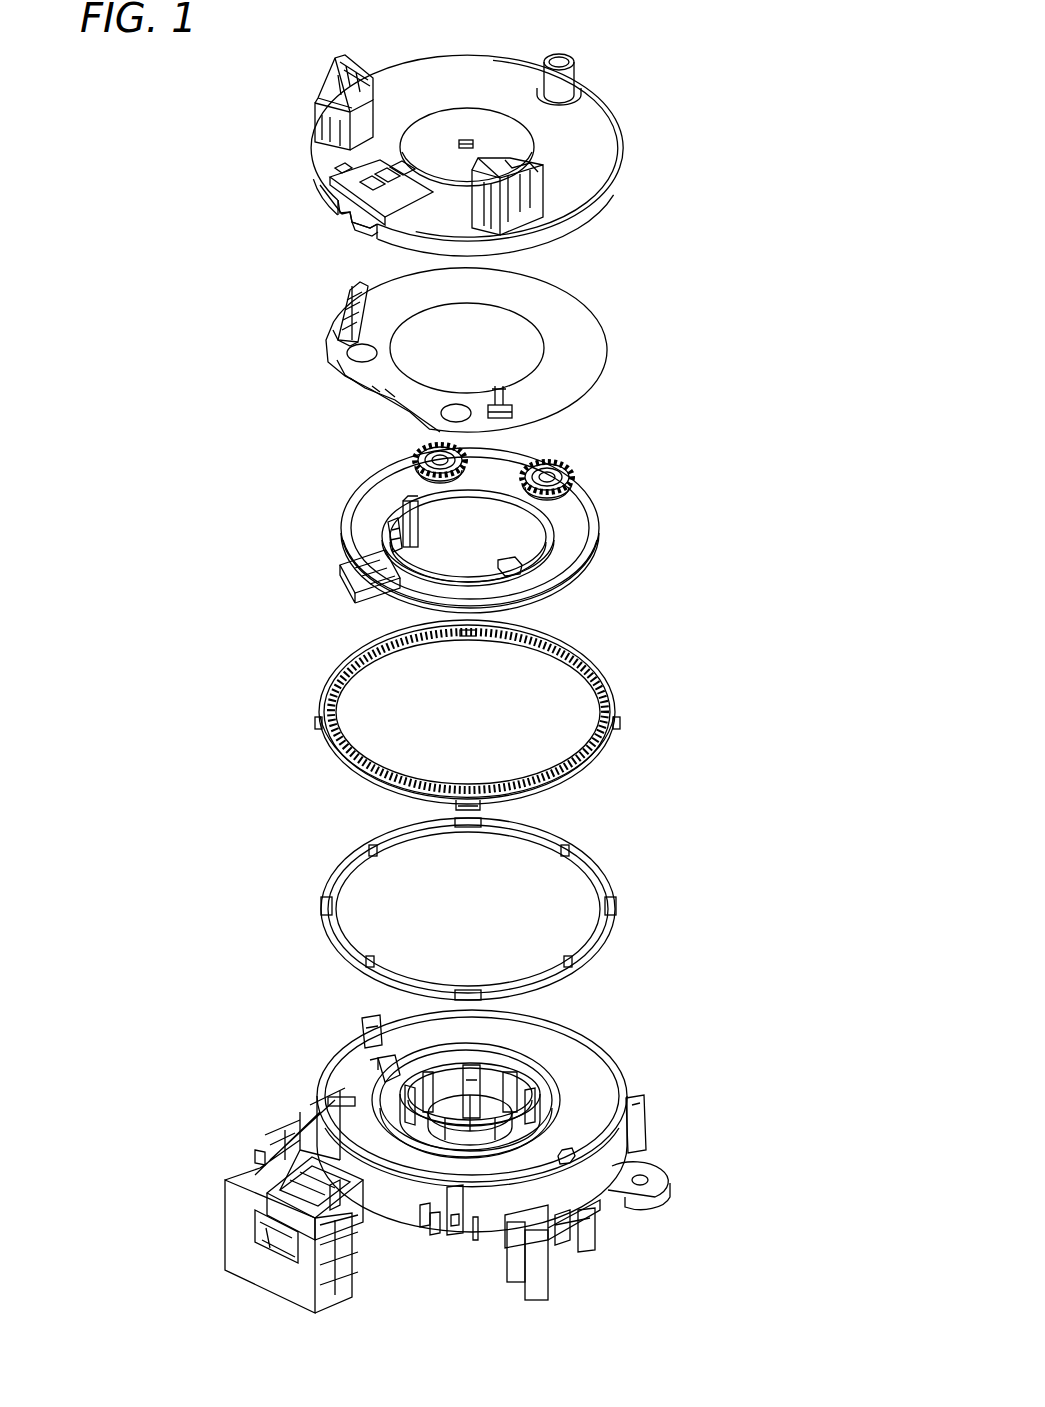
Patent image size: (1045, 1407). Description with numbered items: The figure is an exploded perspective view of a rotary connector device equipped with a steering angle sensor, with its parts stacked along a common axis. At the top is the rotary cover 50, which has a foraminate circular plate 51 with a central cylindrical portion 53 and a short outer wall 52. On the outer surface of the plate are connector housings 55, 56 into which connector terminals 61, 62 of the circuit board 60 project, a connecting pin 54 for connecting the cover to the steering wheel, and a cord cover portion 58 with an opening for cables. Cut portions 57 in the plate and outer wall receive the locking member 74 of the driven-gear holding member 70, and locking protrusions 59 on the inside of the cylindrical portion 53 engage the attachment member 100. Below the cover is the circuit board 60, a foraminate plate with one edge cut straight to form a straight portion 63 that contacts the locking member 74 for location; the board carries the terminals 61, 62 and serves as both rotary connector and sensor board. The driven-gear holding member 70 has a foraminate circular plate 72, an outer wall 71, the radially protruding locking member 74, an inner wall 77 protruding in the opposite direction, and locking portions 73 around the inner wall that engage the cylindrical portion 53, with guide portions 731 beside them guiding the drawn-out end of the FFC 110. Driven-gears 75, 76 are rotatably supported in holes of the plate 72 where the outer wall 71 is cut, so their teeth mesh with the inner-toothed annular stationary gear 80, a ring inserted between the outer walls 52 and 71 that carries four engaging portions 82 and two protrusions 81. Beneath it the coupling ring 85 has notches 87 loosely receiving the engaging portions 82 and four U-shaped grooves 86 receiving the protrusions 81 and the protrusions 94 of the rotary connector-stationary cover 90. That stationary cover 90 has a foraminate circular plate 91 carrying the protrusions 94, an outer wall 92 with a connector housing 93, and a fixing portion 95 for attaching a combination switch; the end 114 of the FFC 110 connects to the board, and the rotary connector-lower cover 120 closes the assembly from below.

The rotary cover 50 is at (476, 134).
The foraminate circular plate 51 is at (605, 160).
The outer wall 52 is at (605, 205).
The cylindrical portion 53 is at (425, 135).
The connecting pin 54 is at (568, 58).
The connector housing 55 is at (323, 115).
The connector housing 56 is at (495, 220).
The cut portion 57 is at (360, 214).
The cord cover portion 58 is at (325, 175).
The locking protrusion 59 is at (465, 138).
The circuit board 60 is at (481, 350).
The connector terminal 61 is at (343, 300).
The connector terminal 62 is at (515, 410).
The straight portion 63 is at (375, 395).
The driven-gear holding member 70 is at (477, 526).
The outer wall 71 is at (560, 572).
The foraminate circular plate 72 is at (565, 535).
The locking portion 73 is at (400, 508).
The guide portion 731 is at (390, 528).
The locking member 74 is at (350, 583).
The driven-gear 75 is at (575, 470).
The driven-gear 76 is at (425, 452).
The inner wall 77 is at (485, 490).
The inner-toothed annular stationary gear 80 is at (473, 724).
The protrusion 81 is at (562, 660).
The engaging portion 82 is at (465, 637).
The coupling ring 85 is at (475, 909).
The U-shaped groove 86 is at (378, 857).
The notch 87 is at (470, 830).
The rotary connector-stationary cover 90 is at (445, 1153).
The foraminate circular plate 91 is at (612, 1095).
The outer wall 92 is at (385, 1225).
The connector housing 93 is at (235, 1236).
The protrusion 94 is at (365, 1030).
The fixing portion 95 is at (655, 1183).
The attachment member 100 is at (450, 1135).
The FFC 110 is at (545, 1090).
The end of the FFC 114 is at (385, 1075).
The rotary connector-lower cover 120 is at (480, 1240).